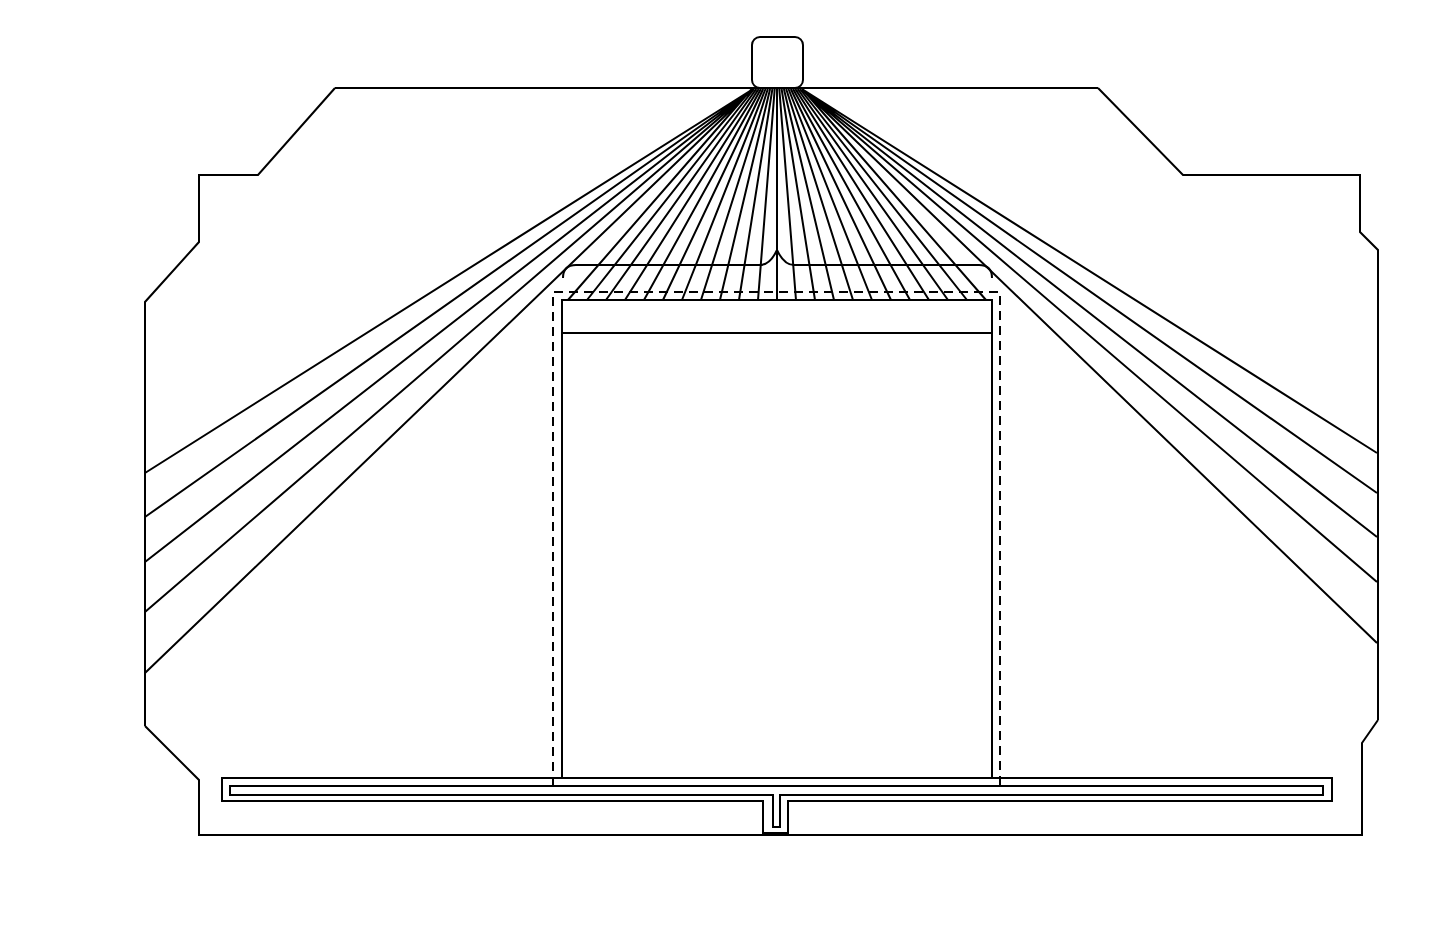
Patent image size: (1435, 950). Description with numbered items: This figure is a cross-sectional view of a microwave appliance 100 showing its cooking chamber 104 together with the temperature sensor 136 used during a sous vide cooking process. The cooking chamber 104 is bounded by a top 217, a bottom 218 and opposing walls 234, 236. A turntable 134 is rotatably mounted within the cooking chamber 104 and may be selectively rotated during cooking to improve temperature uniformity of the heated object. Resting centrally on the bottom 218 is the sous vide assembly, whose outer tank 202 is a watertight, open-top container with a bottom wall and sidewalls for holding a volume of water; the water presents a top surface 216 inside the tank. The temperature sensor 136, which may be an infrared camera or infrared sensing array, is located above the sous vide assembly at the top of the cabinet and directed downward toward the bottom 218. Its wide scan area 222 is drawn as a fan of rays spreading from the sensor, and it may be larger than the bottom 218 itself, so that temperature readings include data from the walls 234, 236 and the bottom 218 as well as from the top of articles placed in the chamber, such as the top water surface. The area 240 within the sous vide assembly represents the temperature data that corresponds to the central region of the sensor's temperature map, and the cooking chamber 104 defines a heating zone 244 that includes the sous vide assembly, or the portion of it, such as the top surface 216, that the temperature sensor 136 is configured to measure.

The microwave appliance 100 is at (167, 107).
The cooking chamber 104 is at (147, 372).
The turntable 134 is at (1243, 795).
The temperature sensor 136 is at (805, 70).
The outer tank 202 is at (992, 728).
The top surface 216 is at (637, 332).
The top 217 is at (393, 92).
The bottom 218 is at (227, 833).
The scan area 222 is at (955, 195).
The wall 234 is at (150, 373).
The wall 236 is at (1377, 413).
The area 240 is at (777, 250).
The heating zone 244 is at (1000, 290).